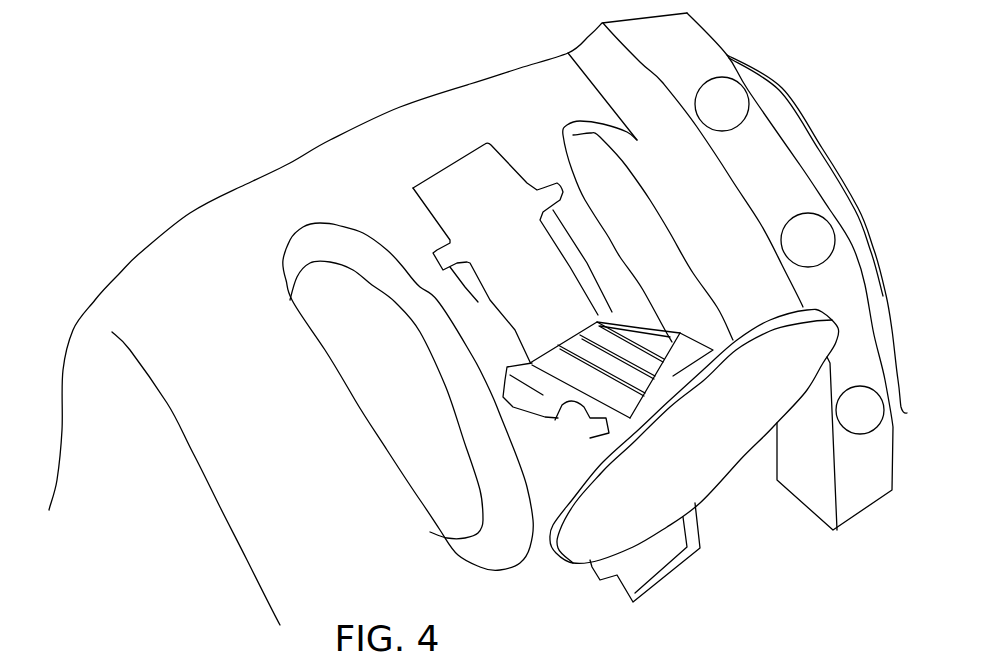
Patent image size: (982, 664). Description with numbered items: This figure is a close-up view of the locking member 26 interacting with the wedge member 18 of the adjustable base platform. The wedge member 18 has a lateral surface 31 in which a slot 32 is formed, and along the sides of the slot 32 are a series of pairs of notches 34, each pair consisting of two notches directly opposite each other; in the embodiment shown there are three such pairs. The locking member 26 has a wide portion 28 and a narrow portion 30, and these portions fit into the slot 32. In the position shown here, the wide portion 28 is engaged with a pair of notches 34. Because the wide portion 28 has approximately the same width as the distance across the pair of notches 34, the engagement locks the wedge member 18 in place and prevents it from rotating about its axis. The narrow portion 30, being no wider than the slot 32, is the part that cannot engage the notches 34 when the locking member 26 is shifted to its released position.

The wedge member 18 is at (132, 515).
The locking member 26 is at (717, 463).
The wide portion 28 is at (552, 405).
The narrow portion 30 is at (567, 420).
The lateral surface 31 is at (438, 248).
The slot 32 is at (475, 187).
The notches 34 is at (512, 390).